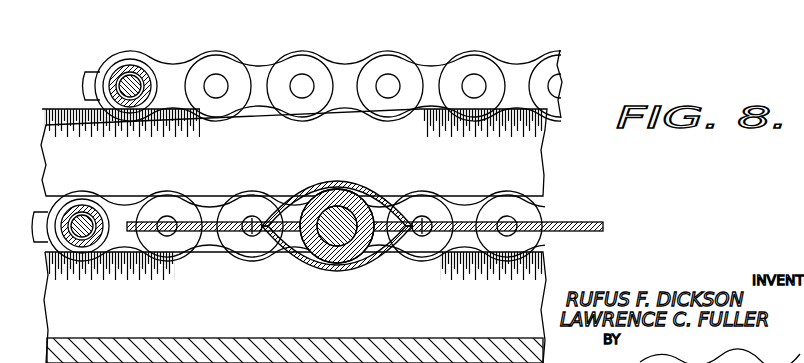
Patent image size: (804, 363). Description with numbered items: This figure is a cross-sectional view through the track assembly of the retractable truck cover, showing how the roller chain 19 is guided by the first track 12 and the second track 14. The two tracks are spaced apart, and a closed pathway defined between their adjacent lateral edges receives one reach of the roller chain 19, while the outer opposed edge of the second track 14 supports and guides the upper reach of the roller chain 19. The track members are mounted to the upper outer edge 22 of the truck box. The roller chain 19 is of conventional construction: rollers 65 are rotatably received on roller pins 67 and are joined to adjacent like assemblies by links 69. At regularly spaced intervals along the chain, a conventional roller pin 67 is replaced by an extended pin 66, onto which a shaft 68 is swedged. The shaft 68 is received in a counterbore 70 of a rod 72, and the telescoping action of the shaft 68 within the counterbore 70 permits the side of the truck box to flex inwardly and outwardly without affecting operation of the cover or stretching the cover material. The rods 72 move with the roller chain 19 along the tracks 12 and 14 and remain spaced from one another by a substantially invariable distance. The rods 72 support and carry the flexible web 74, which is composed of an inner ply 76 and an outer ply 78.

The first track 12 is at (295, 307).
The second track 14 is at (294, 152).
The roller chain 19 is at (399, 51).
The upper outer edge 22 is at (113, 338).
The roller 65 is at (115, 70).
The extended pin 66 is at (336, 260).
The roller pin 67 is at (296, 80).
The shaft 68 is at (356, 255).
The link 69 is at (197, 58).
The counterbore 70 is at (326, 208).
The rod 72 is at (355, 192).
The flexible web 74 is at (579, 217).
The inner ply 76 is at (298, 254).
The outer ply 78 is at (295, 199).